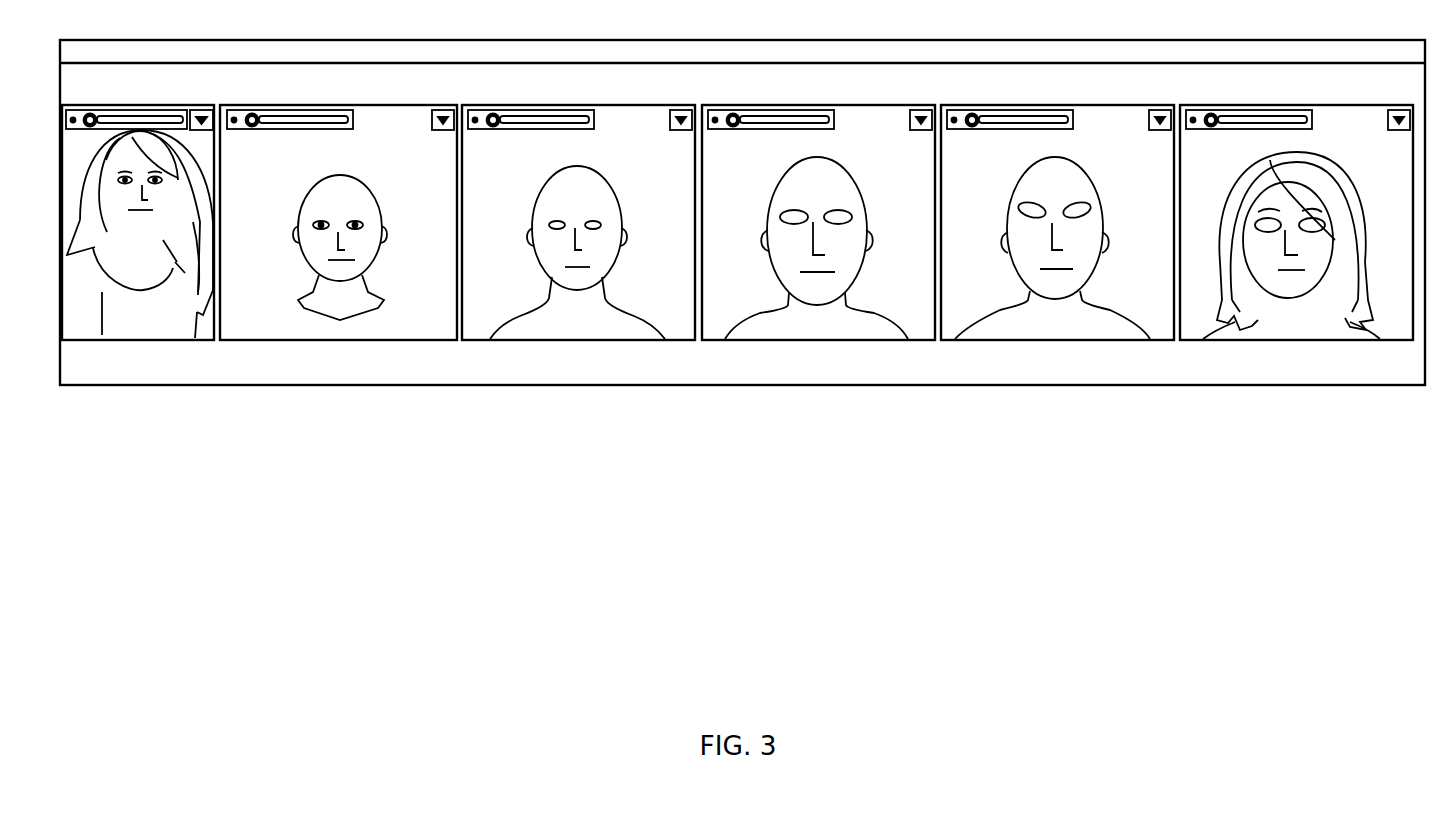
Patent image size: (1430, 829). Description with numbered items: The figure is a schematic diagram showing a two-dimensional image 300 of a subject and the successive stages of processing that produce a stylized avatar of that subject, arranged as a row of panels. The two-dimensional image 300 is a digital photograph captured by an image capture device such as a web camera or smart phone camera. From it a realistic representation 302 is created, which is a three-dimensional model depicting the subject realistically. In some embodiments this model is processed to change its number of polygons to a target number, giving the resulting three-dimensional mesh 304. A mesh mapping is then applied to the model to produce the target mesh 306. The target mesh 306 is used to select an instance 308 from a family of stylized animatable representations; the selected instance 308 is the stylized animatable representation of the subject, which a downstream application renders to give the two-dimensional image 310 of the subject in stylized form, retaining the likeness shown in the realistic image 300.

The 2D image 300 is at (103, 427).
The realistic representation 302 is at (302, 427).
The 3D mesh 304 is at (541, 427).
The target mesh 306 is at (780, 427).
The instance 308 is at (1019, 427).
The 2D image of stylized avatar 310 is at (1258, 427).